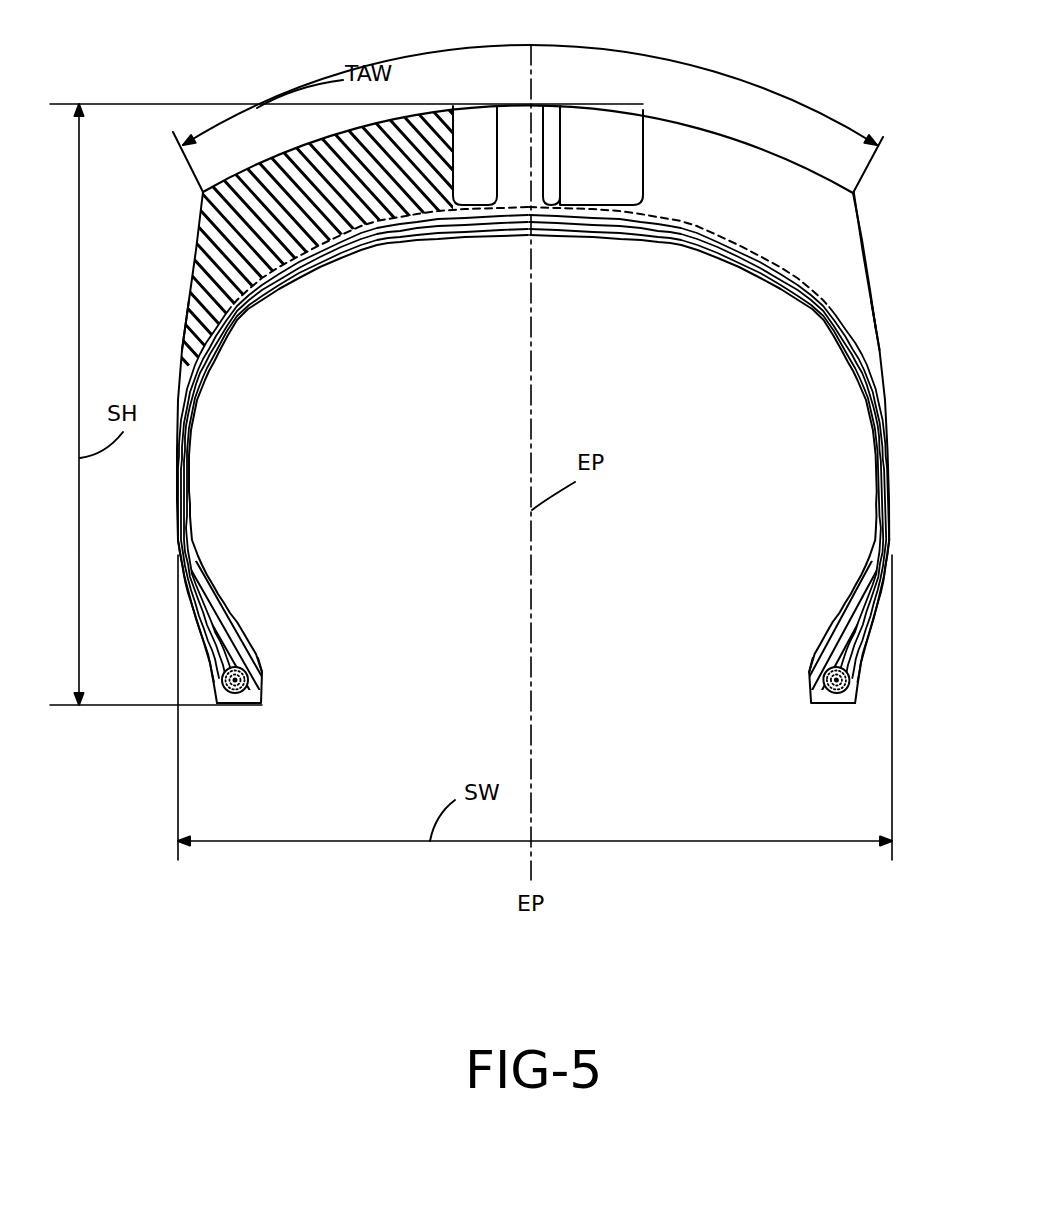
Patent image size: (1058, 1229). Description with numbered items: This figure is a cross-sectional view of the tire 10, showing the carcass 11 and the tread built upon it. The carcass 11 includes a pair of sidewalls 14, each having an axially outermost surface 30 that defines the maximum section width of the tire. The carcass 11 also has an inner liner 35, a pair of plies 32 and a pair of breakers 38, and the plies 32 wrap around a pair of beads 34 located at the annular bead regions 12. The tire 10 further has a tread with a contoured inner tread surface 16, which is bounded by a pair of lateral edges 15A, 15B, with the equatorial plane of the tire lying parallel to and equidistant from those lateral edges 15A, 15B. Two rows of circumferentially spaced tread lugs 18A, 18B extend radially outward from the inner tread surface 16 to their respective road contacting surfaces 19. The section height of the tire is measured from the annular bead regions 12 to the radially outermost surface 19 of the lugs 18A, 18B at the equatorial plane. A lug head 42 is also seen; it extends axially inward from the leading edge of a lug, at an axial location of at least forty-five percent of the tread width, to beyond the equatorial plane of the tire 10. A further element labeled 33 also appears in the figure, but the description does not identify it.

The tire 10 is at (782, 122).
The carcass 11 is at (559, 192).
The annular bead regions 12 is at (237, 720).
The sidewalls 14 is at (165, 488).
The lateral edge 15A is at (178, 398).
The lateral edge 15B is at (882, 362).
The inner tread surface 16 is at (503, 190).
The tread lugs 18A is at (263, 204).
The tread lugs 18B is at (810, 233).
The road contacting surfaces 19 is at (250, 167).
The axially outermost surface 30 is at (177, 538).
The plies 32 is at (370, 243).
The shoulder region 33 is at (185, 318).
The beads 34 is at (257, 692).
The inner liner 35 is at (253, 653).
The breakers 38 is at (453, 217).
The lug head 42 is at (622, 132).